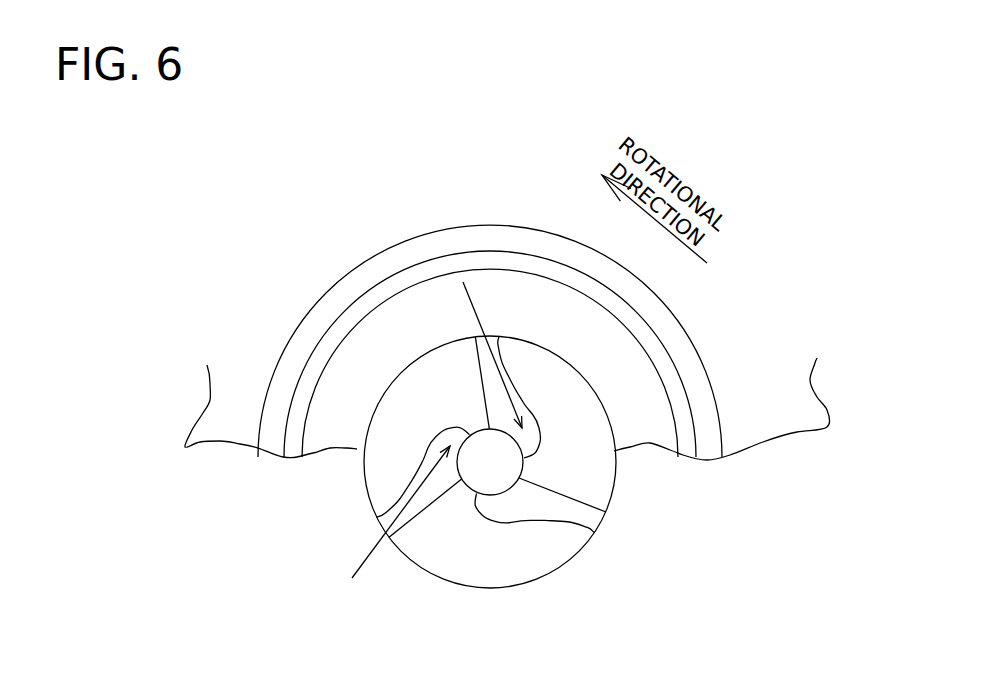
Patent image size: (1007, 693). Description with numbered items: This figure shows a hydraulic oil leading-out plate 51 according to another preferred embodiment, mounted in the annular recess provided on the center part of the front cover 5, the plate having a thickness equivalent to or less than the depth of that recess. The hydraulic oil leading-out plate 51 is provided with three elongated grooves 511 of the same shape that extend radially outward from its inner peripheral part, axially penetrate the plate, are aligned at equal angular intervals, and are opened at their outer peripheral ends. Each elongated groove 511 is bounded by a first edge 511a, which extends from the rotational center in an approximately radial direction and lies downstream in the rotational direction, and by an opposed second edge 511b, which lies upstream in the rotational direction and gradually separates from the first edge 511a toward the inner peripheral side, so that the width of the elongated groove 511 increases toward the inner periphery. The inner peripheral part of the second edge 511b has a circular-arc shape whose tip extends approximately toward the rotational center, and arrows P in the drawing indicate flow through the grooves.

The front cover 5 is at (630, 360).
The hydraulic oil leading-out plate 51 is at (472, 422).
The elongated groove 511 is at (464, 422).
The first edge 511a is at (492, 400).
The second edge 511b is at (522, 408).
The fluid flow direction P is at (470, 297).